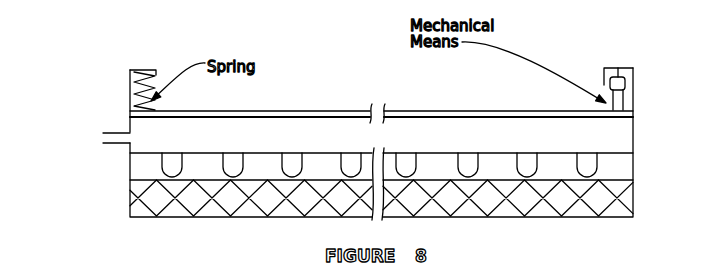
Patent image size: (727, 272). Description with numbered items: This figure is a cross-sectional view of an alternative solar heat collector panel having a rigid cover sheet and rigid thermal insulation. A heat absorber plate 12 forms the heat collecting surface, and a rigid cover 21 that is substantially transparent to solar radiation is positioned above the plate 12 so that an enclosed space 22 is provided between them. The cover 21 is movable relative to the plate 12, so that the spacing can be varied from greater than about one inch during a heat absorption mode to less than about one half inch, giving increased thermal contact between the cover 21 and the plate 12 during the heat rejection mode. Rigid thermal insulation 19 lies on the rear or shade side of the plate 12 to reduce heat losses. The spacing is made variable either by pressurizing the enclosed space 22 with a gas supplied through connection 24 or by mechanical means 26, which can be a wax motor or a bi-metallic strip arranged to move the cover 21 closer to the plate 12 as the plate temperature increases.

The heat absorber plate 12 is at (602, 168).
The rigid thermal insulation 19 is at (148, 197).
The rigid cover 21 is at (400, 104).
The enclosed space 22 is at (626, 135).
The connection 24 is at (92, 142).
The mechanical means 26 is at (641, 92).